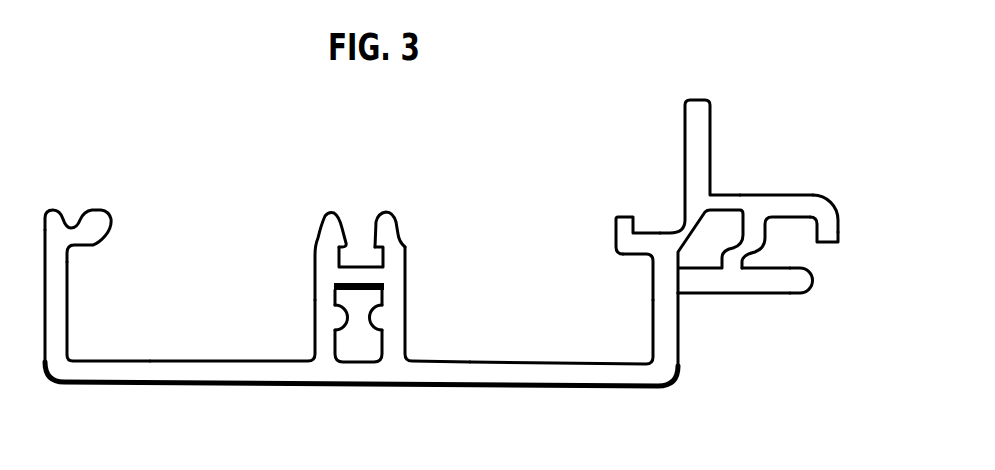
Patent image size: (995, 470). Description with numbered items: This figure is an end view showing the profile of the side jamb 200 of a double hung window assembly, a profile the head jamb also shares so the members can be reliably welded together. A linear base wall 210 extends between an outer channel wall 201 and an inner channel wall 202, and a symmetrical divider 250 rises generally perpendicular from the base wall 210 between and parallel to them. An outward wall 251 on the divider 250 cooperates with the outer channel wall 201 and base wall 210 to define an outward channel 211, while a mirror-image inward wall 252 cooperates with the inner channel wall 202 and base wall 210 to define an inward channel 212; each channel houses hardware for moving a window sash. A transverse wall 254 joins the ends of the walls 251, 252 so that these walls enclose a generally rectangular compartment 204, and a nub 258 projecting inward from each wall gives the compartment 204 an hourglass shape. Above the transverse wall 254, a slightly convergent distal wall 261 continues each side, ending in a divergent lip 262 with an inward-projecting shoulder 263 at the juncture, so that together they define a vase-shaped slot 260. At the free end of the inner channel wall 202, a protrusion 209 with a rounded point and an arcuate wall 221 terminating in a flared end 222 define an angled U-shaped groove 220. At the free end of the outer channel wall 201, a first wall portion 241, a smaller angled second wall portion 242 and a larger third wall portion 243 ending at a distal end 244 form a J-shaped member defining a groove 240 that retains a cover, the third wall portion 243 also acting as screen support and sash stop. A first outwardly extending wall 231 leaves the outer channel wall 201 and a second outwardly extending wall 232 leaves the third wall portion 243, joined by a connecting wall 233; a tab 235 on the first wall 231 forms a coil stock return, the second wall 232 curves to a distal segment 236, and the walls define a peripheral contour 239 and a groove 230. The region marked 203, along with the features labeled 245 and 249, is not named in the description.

The side jamb 200 is at (543, 89).
The outer channel wall 201 is at (675, 347).
The inner channel wall 202 is at (53, 330).
The channel 203 is at (703, 262).
The compartment 204 is at (367, 298).
The distal wall segment or protrusion 209 is at (54, 214).
The base wall 210 is at (355, 379).
The outward channel 211 is at (530, 337).
The inward channel 212 is at (188, 340).
The U-shaped groove 220 is at (74, 221).
The arcuate wall 221 is at (87, 247).
The end 222 is at (109, 218).
The groove 230 is at (818, 252).
The first outwardly extending wall 231 is at (798, 296).
The second outwardly extending wall 232 is at (792, 197).
The connecting wall 233 is at (732, 262).
The tab 235 is at (807, 265).
The distal segment 236 is at (839, 230).
The peripheral contour 239 is at (831, 204).
The groove 240 is at (655, 222).
The first wall portion 241 is at (633, 248).
The second wall portion 242 is at (617, 215).
The third wall portion 243 is at (712, 131).
The distal end 244 is at (693, 98).
The boss 245 is at (752, 240).
The inner boss 249 is at (727, 198).
The divider 250 is at (408, 254).
The outward wall 251 is at (333, 298).
The inward wall 252 is at (398, 345).
The transverse wall 254 is at (347, 277).
The nub 258 is at (343, 314).
The slot 260 is at (363, 233).
The distal wall 261 is at (326, 256).
The lip 262 is at (325, 216).
The shoulder 263 is at (342, 228).